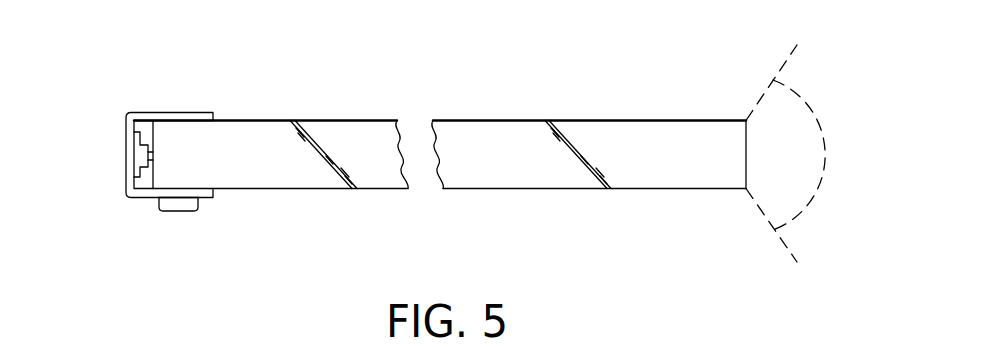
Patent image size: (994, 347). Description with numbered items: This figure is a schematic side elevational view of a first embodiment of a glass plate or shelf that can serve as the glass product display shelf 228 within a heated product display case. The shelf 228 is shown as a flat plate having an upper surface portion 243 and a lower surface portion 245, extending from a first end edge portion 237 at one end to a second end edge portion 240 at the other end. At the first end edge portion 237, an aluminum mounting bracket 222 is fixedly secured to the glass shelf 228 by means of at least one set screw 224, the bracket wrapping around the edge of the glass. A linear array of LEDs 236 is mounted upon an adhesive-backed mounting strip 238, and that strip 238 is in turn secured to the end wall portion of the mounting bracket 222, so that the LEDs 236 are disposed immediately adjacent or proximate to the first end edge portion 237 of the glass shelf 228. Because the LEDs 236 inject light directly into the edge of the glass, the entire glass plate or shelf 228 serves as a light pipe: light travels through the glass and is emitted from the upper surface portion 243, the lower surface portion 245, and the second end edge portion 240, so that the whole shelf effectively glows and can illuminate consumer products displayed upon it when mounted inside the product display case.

The mounting bracket 222 is at (127, 199).
The set screw 224 is at (197, 212).
The glass product display shelf 228 is at (597, 130).
The linear array of LEDs 236 is at (150, 153).
The first end edge portion 237 is at (170, 172).
The adhesive-backed mounting strip 238 is at (140, 150).
The second end edge portion 240 is at (737, 143).
The upper surface portion 243 is at (472, 130).
The lower surface portion 245 is at (572, 189).